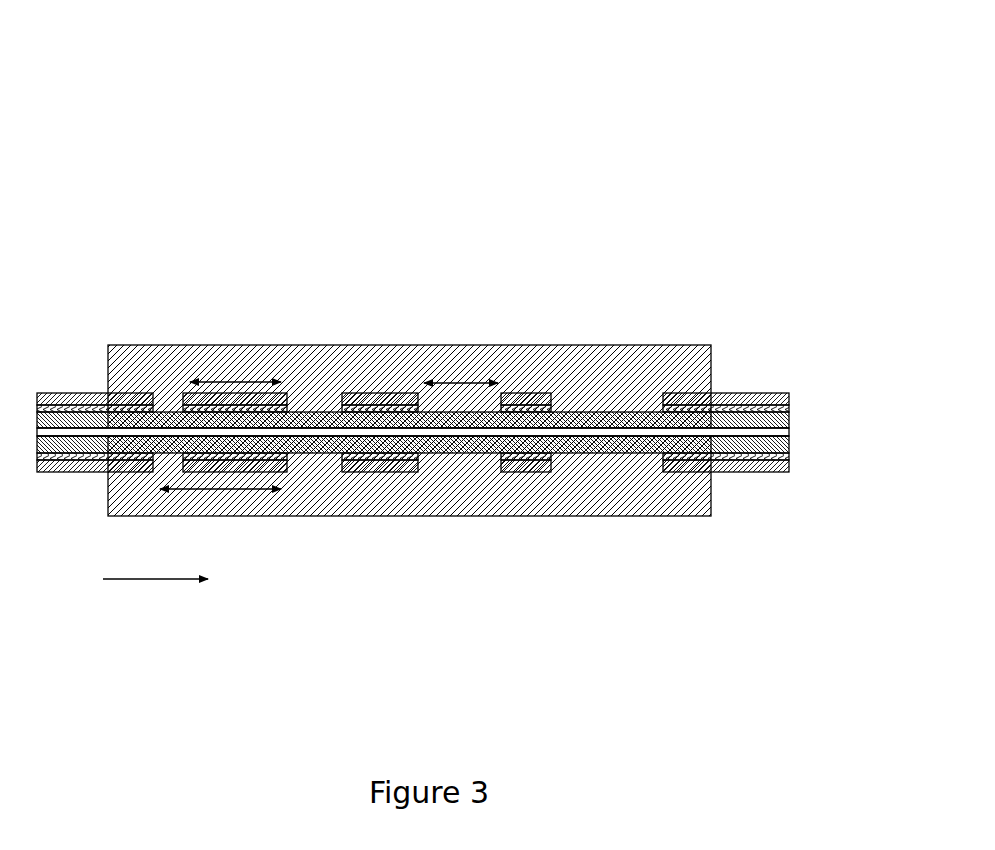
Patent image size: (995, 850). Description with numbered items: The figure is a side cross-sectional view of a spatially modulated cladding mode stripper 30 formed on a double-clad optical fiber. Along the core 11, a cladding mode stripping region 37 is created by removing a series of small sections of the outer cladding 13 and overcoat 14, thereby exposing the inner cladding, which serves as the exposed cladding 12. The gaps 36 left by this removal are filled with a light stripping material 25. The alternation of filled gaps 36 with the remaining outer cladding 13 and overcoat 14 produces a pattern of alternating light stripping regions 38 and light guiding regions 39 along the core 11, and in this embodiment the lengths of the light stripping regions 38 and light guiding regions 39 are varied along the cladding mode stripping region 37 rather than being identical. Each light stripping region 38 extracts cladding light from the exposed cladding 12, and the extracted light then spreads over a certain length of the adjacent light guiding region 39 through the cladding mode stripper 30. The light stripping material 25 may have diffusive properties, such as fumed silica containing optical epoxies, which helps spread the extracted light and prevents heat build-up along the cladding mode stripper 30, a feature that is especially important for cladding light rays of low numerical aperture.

The cladding mode stripper 30 is at (302, 128).
The gaps 36 is at (167, 398).
The light guiding regions 39 is at (257, 345).
The light stripping regions 38 is at (468, 347).
The light stripping material 25 is at (607, 368).
The overcoat 14 is at (790, 398).
The outer cladding 13 is at (790, 408).
The cladding mode stripping region 37 is at (666, 507).
The core 11 is at (478, 433).
The exposed cladding 12 is at (596, 443).